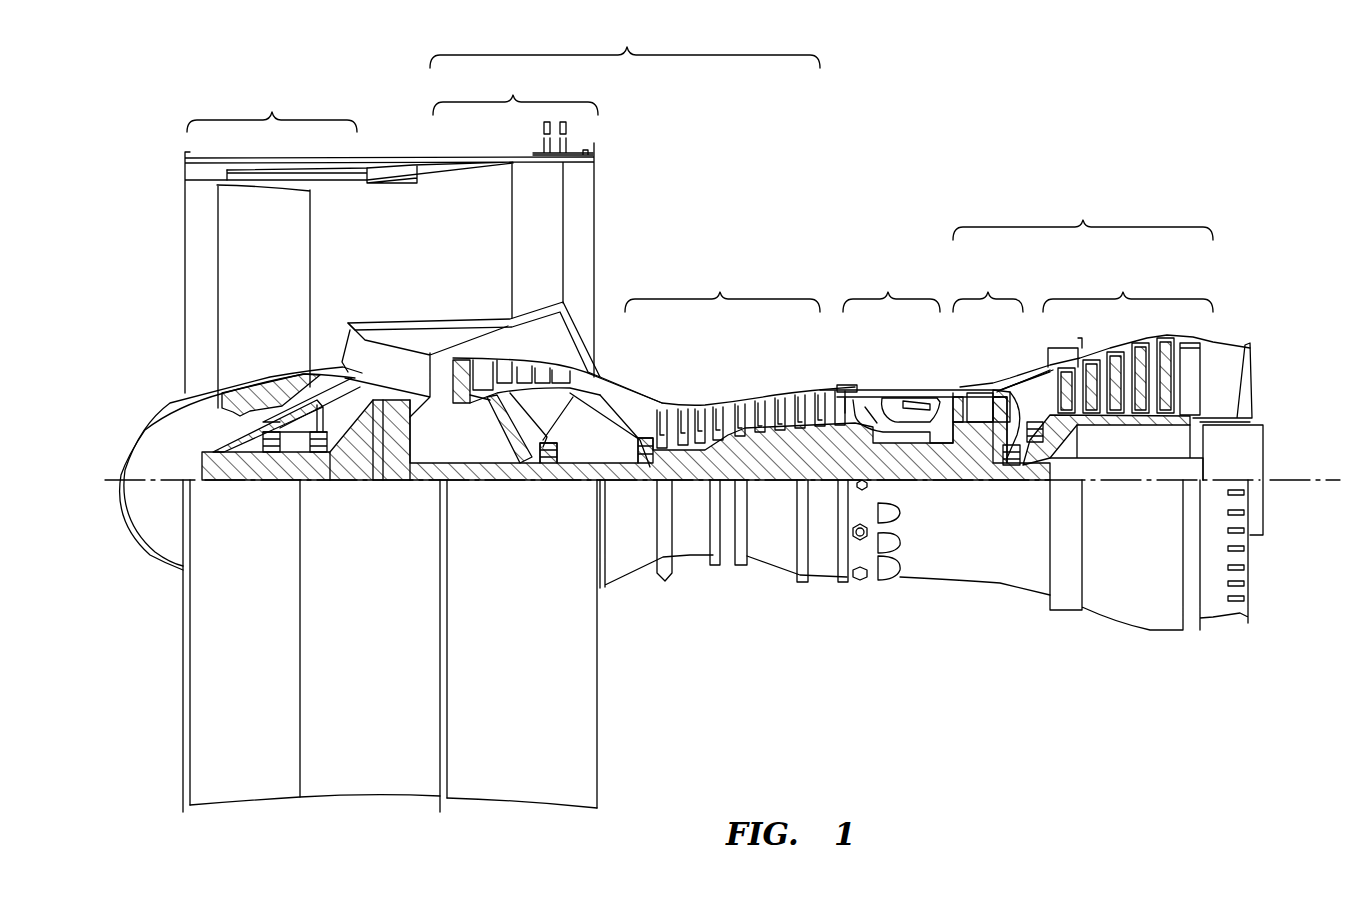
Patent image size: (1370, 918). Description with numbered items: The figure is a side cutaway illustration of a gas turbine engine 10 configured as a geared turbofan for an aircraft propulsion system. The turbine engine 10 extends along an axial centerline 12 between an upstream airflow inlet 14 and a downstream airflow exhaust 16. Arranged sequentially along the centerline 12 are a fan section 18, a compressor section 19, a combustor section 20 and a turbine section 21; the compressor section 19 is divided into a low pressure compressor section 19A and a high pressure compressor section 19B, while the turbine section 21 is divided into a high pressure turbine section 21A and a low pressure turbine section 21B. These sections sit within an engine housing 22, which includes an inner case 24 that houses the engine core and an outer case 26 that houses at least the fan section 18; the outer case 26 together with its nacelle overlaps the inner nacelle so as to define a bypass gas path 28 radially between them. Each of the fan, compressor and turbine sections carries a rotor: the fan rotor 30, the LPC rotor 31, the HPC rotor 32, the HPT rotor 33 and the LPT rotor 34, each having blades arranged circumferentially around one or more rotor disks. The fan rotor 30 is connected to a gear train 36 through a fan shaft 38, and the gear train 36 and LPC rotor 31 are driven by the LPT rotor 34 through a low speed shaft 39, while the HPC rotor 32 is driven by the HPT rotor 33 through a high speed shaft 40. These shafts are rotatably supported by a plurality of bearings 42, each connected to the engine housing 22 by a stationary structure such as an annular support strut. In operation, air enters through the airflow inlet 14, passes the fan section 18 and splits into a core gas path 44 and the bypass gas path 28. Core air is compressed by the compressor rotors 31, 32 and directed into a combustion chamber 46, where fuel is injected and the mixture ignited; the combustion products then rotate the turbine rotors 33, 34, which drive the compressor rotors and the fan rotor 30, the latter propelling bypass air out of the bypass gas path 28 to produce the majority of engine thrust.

The gas turbine engine 10 is at (146, 136).
The axial centerline 12 is at (1330, 478).
The upstream airflow inlet 14 is at (184, 235).
The downstream airflow exhaust 16 is at (1258, 380).
The fan section 18 is at (272, 106).
The compressor section 19 is at (625, 43).
The low pressure compressor (LPC) section 19A is at (547, 233).
The high pressure compressor (HPC) section 19B is at (727, 355).
The combustor section 20 is at (936, 363).
The turbine section 21 is at (1083, 214).
The high pressure turbine (HPT) section 21A is at (1017, 361).
The low pressure turbine (LPT) section 21B is at (1105, 364).
The engine housing 22 is at (620, 596).
The inner case 24 is at (822, 575).
The outer case 26 is at (530, 808).
The bypass gas path 28 is at (444, 250).
The fan rotor 30 is at (190, 393).
The LPC rotor 31 is at (500, 432).
The HPC rotor 32 is at (790, 440).
The HPT rotor 33 is at (1000, 455).
The LPT rotor 34 is at (1123, 425).
The gear train 36 is at (393, 480).
The fan shaft 38 is at (255, 470).
The low speed shaft 39 is at (1130, 482).
The high speed shaft 40 is at (905, 460).
The bearings 42 is at (285, 465).
The core gas path 44 is at (620, 402).
The combustion chamber 46 is at (905, 412).